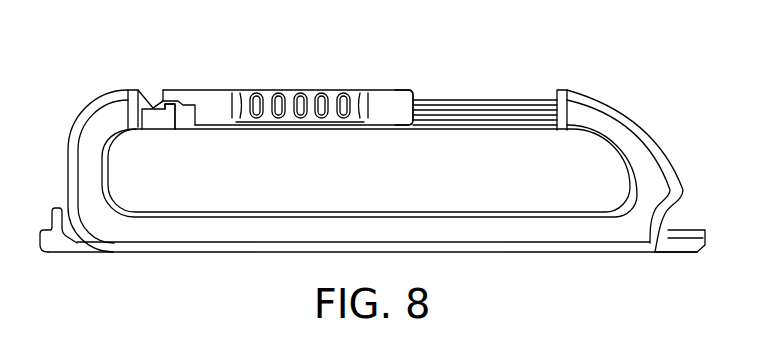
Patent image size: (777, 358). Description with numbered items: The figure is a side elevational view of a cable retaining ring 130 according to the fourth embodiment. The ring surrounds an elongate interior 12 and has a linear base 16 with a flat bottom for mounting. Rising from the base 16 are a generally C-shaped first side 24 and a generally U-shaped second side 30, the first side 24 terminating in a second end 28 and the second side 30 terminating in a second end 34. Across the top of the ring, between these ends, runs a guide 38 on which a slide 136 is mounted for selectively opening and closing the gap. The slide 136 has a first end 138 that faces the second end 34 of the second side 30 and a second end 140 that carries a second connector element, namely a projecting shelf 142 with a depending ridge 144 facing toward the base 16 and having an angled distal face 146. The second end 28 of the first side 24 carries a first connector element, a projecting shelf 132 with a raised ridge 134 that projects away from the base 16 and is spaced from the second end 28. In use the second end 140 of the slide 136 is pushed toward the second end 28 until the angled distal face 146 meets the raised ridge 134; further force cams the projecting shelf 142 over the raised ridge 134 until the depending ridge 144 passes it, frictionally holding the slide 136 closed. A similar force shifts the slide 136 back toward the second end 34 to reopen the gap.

The elongate interior 12 is at (470, 192).
The base 16 is at (282, 230).
The first side 24 is at (83, 170).
The second end of the first side 28 is at (120, 97).
The second side 30 is at (653, 172).
The second end of the second side 34 is at (580, 100).
The guide 38 is at (505, 105).
The cable retaining ring 130 is at (622, 288).
The projecting shelf 132 is at (148, 131).
The raised ridge 134 is at (168, 120).
The slide 136 is at (288, 92).
The first end of the slide 138 is at (397, 97).
The second end of the slide 140 is at (214, 100).
The projecting shelf of the slide 142 is at (174, 100).
The depending ridge 144 is at (155, 100).
The angled distal face 146 is at (150, 103).